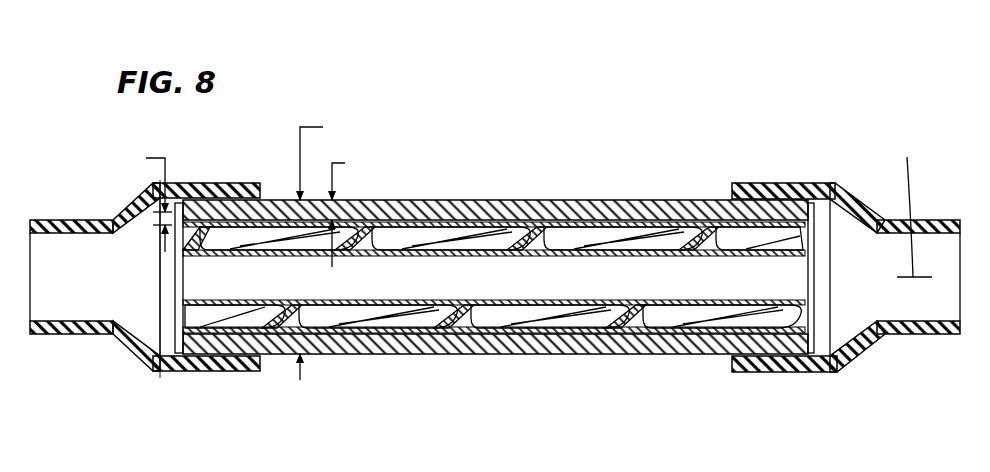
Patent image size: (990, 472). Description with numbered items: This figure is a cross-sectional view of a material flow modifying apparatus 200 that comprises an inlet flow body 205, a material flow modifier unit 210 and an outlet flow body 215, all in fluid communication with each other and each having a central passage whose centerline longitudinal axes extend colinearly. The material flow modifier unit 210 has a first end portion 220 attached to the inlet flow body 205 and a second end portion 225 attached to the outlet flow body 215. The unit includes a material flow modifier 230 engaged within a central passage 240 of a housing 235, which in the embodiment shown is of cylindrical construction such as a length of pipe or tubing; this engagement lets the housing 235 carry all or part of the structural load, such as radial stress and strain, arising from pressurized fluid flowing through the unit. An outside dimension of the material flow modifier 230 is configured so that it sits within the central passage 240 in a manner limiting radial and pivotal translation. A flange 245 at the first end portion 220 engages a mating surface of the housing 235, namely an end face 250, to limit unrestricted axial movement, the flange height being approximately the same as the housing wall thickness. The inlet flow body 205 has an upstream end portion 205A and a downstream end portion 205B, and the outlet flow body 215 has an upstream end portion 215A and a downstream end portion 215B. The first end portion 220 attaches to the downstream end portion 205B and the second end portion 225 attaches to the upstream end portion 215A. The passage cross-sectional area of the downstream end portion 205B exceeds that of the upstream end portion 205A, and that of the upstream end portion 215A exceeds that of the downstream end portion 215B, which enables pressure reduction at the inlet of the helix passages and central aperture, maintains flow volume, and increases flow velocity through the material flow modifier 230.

The material flow modifying apparatus 200 is at (563, 145).
The inlet flow body 205 is at (122, 214).
The upstream end portion of inlet flow body 205A is at (58, 300).
The downstream end portion of inlet flow body 205B is at (165, 371).
The material flow modifier unit 210 is at (470, 346).
The outlet flow body 215 is at (853, 193).
The upstream end portion of outlet flow body 215A is at (818, 352).
The downstream end portion of outlet flow body 215B is at (918, 300).
The first end portion 220 is at (210, 369).
The second end portion 225 is at (797, 346).
The material flow modifier 230 is at (368, 238).
The housing 235 is at (432, 224).
The central passage 240 is at (668, 212).
The flange 245 is at (187, 197).
The end face 250 is at (182, 207).